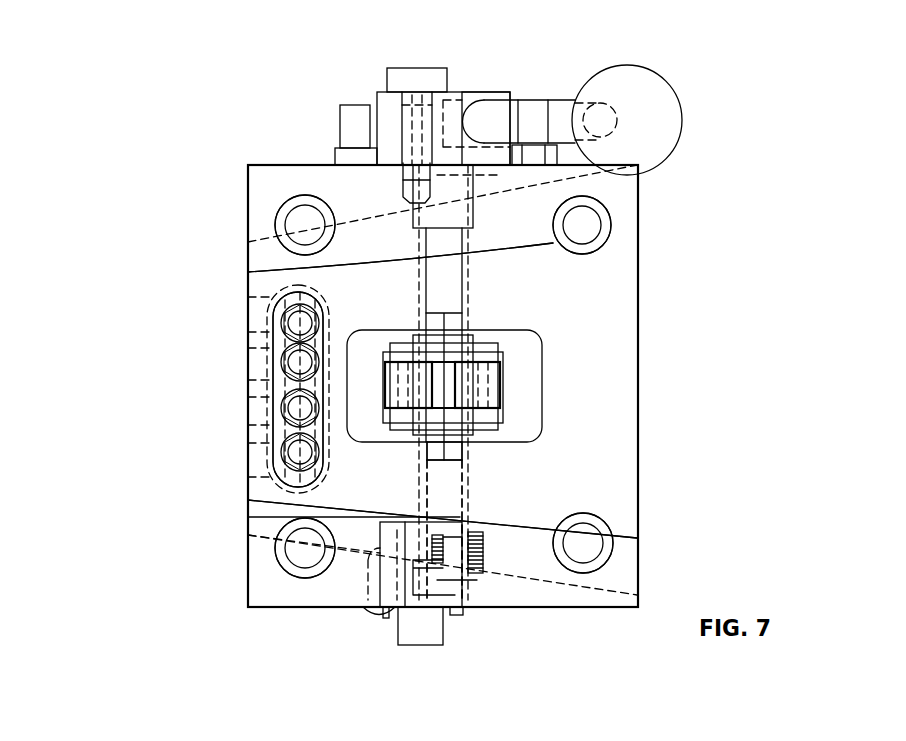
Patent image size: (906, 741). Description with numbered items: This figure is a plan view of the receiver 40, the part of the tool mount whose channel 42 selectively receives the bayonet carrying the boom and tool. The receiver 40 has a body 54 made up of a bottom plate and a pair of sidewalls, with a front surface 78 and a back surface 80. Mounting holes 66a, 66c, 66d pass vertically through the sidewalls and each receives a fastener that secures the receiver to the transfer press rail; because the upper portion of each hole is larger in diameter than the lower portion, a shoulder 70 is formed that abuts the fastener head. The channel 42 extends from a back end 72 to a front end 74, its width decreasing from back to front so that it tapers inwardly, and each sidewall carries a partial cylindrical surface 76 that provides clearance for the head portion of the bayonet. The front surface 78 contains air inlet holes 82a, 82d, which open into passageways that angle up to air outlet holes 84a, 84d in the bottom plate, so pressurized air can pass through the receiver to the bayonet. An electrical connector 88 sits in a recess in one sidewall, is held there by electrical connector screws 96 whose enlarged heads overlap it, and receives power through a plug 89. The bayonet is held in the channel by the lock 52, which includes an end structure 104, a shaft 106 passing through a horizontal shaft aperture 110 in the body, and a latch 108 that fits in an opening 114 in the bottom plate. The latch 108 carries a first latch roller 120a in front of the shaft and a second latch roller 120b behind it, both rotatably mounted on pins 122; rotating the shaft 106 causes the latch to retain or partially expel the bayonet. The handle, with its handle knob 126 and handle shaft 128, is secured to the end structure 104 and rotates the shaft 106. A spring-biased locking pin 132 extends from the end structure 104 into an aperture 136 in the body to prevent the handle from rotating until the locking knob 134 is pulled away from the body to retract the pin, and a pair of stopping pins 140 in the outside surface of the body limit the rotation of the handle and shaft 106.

The receiver 40 is at (120, 213).
The channel 42 is at (593, 287).
The lock 52 is at (168, 92).
The body 54 is at (268, 588).
The mounting hole 66a is at (277, 217).
The mounting hole 66c is at (590, 230).
The mounting hole 66d is at (300, 556).
The shoulder 70 is at (308, 225).
The back end 72 is at (782, 362).
The front end 74 is at (115, 387).
The partial cylindrical surface 76 is at (262, 268).
The front surface 78 is at (262, 590).
The back surface 80 is at (642, 530).
The air inlet hole 82a is at (262, 315).
The air inlet hole 82d is at (262, 470).
The air outlet hole 84a is at (297, 325).
The air outlet hole 84d is at (297, 450).
The electrical connector 88 is at (470, 585).
The plug 89 is at (415, 648).
The electrical connector screw 96 is at (384, 620).
The end structure 104 is at (453, 95).
The shaft 106 is at (470, 297).
The latch 108 is at (487, 353).
The shaft aperture 110 is at (467, 480).
The opening 114 is at (525, 418).
The first latch roller 120a is at (384, 380).
The second latch roller 120b is at (507, 390).
The pin 122 is at (490, 428).
The handle knob 126 is at (660, 120).
The handle shaft 128 is at (557, 113).
The locking pin 132 is at (397, 133).
The locking knob 134 is at (425, 76).
The aperture 136 is at (397, 178).
The stopping pin 140 is at (353, 106).